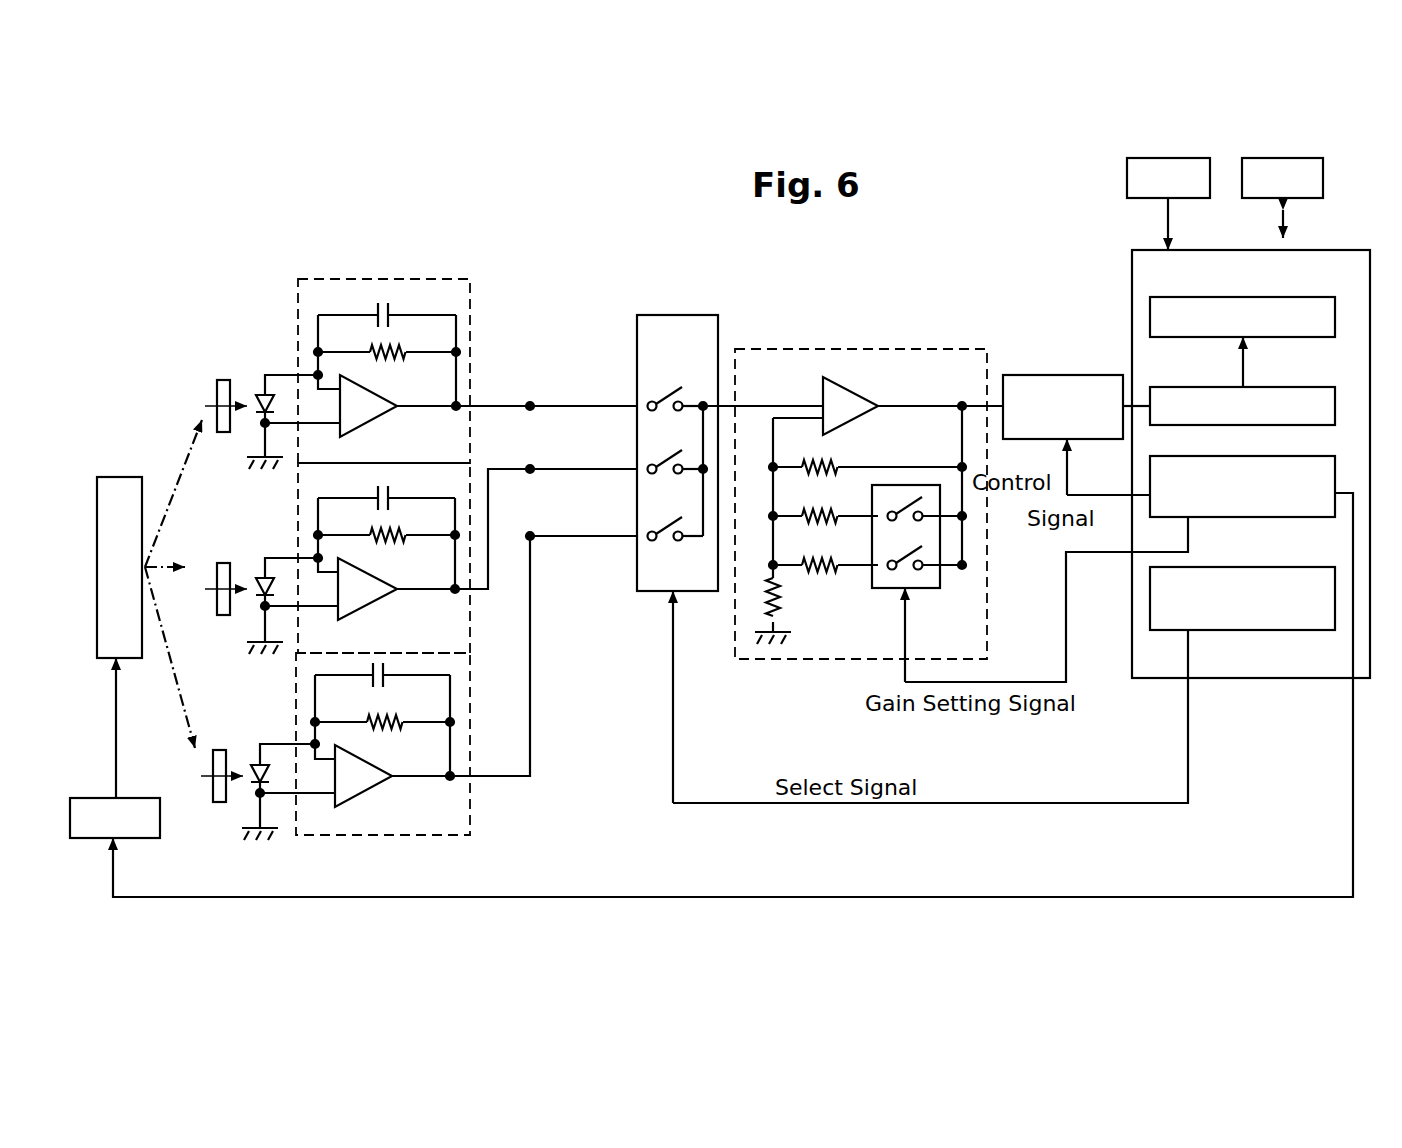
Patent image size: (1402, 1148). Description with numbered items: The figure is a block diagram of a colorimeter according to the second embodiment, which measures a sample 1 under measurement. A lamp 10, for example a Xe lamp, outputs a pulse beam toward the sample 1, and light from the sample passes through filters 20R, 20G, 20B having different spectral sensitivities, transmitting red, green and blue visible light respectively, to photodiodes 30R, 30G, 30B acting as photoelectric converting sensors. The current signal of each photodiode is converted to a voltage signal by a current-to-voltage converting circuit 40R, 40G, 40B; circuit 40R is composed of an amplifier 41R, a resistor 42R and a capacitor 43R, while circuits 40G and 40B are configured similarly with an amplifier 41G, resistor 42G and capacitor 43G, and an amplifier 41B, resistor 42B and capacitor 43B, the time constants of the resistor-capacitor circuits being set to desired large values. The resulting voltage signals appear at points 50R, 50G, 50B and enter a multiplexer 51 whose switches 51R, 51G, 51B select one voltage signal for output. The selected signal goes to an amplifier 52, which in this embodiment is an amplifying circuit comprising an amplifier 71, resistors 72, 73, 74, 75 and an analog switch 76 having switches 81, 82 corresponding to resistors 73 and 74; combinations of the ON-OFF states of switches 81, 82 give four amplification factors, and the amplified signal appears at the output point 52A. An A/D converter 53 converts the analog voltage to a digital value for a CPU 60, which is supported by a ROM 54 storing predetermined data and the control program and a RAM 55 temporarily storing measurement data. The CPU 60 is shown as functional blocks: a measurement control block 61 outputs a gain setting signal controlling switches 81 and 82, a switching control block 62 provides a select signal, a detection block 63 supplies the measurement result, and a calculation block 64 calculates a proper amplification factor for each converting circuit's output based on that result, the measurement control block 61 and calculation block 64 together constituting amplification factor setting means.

The sample 1 is at (113, 477).
The lamp 10 is at (132, 798).
The filter 20R is at (222, 380).
The filter 20G is at (222, 563).
The filter 20B is at (219, 802).
The photodiode 30R is at (263, 358).
The photodiode 30G is at (263, 542).
The photodiode 30B is at (258, 728).
The current-to-voltage converting circuit 40R is at (401, 350).
The current-to-voltage converting circuit 40G is at (396, 561).
The current-to-voltage converting circuit 40B is at (404, 747).
The amplifier 41R is at (360, 426).
The amplifier 41G is at (362, 612).
The amplifier 41B is at (358, 807).
The resistor 42R is at (378, 360).
The resistor 42G is at (378, 545).
The resistor 42B is at (376, 730).
The capacitor 43R is at (383, 303).
The capacitor 43G is at (383, 500).
The capacitor 43B is at (383, 687).
The point 50R is at (517, 391).
The point 50G is at (517, 513).
The point 50B is at (514, 639).
The multiplexer 51 is at (697, 419).
The switch 51R is at (648, 398).
The switch 51G is at (648, 464).
The switch 51B is at (648, 531).
The amplifier 52 is at (882, 464).
The point 52A is at (962, 385).
The A/D converter 53 is at (1068, 375).
The ROM 54 is at (1153, 158).
The RAM 55 is at (1270, 158).
The CPU 60 is at (1251, 441).
The measurement control block 61 is at (1290, 518).
The switching control block 62 is at (1290, 630).
The detection block 63 is at (1290, 426).
The calculation block 64 is at (1290, 338).
The amplifier 71 is at (836, 388).
The resistor 72 is at (826, 468).
The resistor 73 is at (820, 514).
The resistor 74 is at (830, 572).
The resistor 75 is at (782, 604).
The analog switch 76 is at (951, 543).
The switch 81 is at (920, 525).
The switch 82 is at (912, 585).